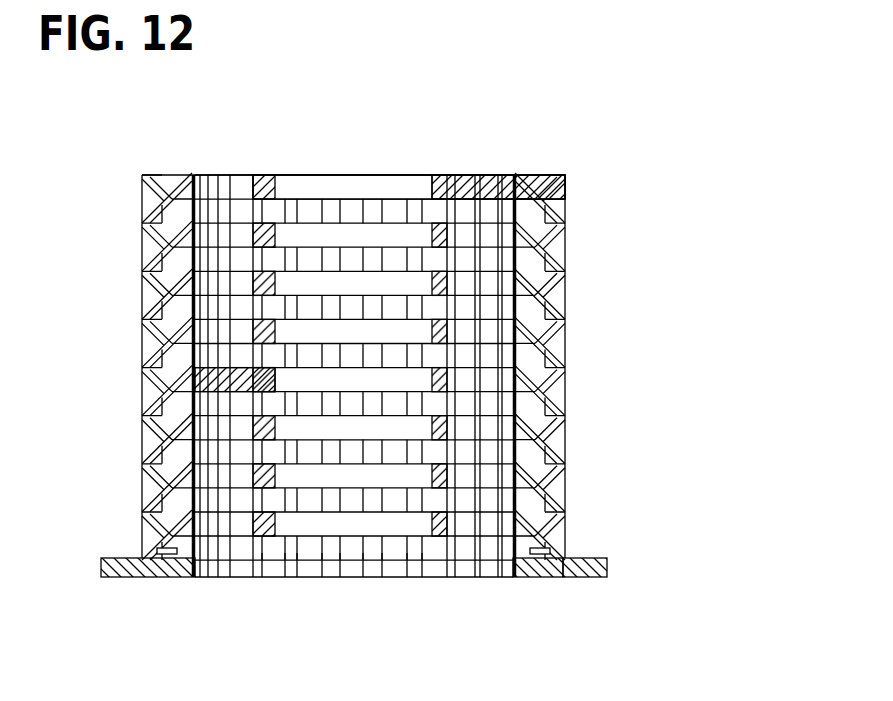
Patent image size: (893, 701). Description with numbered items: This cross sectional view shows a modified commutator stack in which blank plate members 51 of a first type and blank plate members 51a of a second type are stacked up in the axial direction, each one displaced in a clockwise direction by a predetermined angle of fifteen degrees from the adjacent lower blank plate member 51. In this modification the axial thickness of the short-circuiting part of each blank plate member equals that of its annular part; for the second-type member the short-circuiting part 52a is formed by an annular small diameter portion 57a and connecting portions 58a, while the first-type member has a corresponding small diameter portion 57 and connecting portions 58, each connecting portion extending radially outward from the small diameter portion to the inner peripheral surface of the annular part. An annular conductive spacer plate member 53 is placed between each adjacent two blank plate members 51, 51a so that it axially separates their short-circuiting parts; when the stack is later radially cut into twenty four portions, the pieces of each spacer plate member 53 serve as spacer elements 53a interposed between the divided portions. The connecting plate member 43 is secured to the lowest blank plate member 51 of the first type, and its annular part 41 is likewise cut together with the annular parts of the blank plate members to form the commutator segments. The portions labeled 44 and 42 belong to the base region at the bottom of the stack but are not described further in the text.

The short-circuiting part 52a is at (409, 137).
The annular small diameter portion 57a is at (268, 173).
The connecting portion 58a is at (486, 174).
The blank plate member of a second type 51a is at (567, 189).
The blank plate member of a first type 51 is at (567, 236).
The annular conductive spacer plate member 53 is at (567, 210).
The spacer element 53a is at (141, 207).
The annular small diameter portion 57 is at (434, 378).
The connecting portion 58 is at (270, 378).
The base bonding layer 44 is at (525, 578).
The annular part 41 is at (553, 578).
The base edge layer 42 is at (588, 593).
The connecting plate member 43 is at (361, 613).